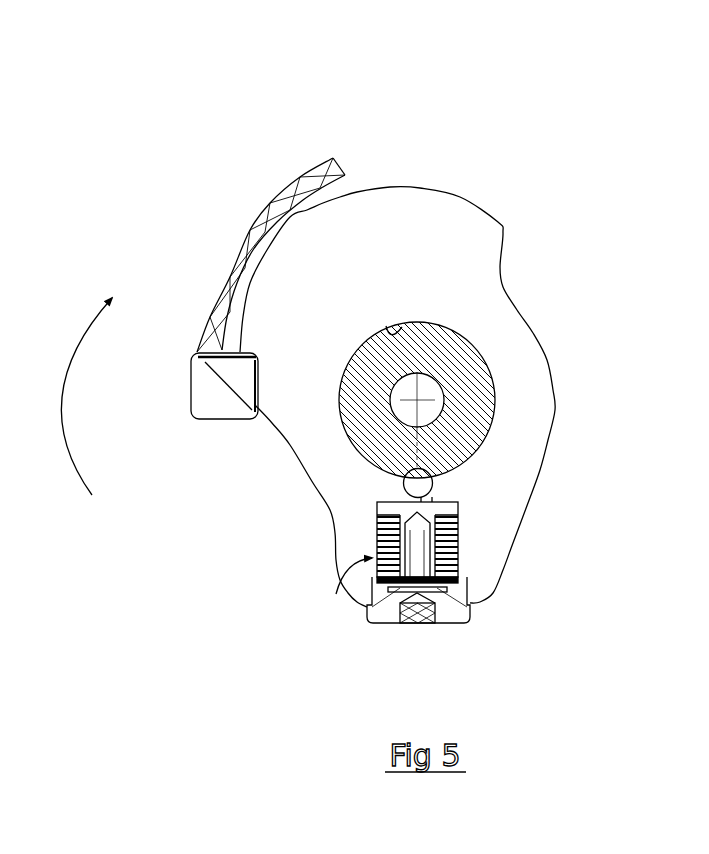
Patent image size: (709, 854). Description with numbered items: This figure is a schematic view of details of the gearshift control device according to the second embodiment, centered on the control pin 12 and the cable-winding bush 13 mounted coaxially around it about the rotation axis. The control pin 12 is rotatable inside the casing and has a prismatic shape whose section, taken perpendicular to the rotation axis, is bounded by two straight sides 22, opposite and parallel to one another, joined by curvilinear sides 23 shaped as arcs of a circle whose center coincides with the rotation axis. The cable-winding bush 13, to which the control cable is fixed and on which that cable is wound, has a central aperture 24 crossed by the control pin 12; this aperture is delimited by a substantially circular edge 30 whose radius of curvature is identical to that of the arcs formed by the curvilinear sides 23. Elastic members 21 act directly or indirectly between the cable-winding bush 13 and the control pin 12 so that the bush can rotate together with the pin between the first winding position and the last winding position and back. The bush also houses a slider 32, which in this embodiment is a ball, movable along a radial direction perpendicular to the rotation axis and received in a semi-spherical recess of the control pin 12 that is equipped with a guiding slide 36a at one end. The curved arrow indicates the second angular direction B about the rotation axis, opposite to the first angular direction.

The control pin 12 is at (455, 352).
The cable-winding bush 13 is at (292, 272).
The elastic members 21 is at (337, 570).
The straight sides 22 is at (473, 393).
The curvilinear sides 23 is at (440, 325).
The central aperture 24 is at (340, 411).
The edge 30 is at (395, 338).
The slider 32 is at (418, 482).
The guiding slide 36a is at (400, 479).
The second angular direction B is at (86, 396).